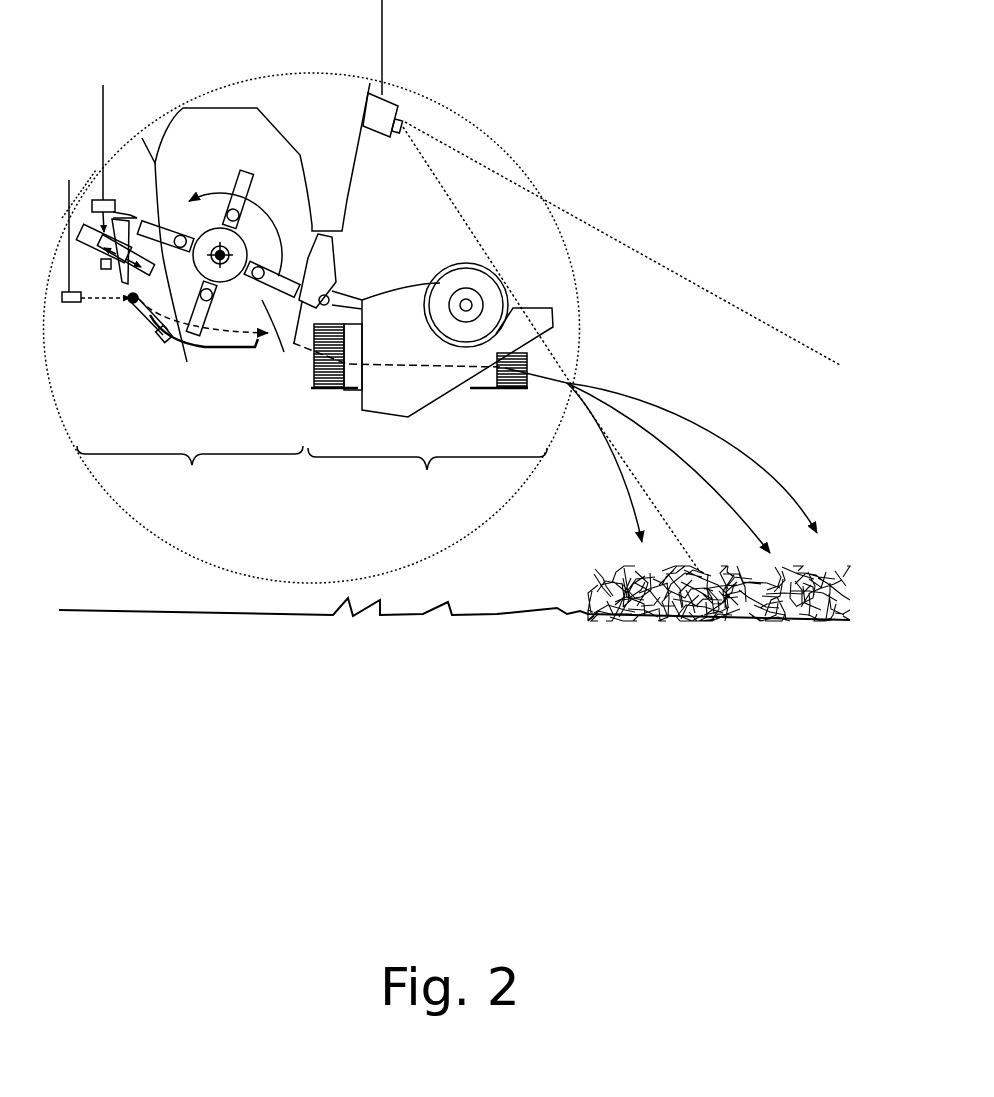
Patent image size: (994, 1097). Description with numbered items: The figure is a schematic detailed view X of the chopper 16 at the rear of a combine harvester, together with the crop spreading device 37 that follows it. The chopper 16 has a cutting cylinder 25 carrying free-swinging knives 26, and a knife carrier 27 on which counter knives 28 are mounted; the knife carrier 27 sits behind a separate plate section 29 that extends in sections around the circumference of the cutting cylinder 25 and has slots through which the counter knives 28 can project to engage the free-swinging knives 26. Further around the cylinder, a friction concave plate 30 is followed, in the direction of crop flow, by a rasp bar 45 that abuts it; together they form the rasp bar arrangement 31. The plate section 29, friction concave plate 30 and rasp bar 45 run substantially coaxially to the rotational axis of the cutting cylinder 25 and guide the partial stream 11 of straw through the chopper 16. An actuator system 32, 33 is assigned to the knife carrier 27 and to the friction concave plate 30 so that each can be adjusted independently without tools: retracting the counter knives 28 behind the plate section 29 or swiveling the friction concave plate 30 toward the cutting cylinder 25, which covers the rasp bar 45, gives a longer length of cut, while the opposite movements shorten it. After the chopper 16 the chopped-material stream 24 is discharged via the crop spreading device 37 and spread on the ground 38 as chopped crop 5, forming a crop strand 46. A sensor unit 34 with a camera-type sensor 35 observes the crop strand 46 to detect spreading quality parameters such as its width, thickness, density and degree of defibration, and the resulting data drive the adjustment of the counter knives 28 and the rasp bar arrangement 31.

The chopped crop or straw 5 is at (662, 578).
The partial stream 11 is at (183, 108).
The chopper 16 is at (190, 477).
The chopped-material stream 24 is at (338, 298).
The cutting cylinder 25 is at (236, 268).
The knives 26 is at (284, 352).
The knife carrier 27 is at (105, 278).
The counter knives 28 is at (158, 277).
The plate section 29 is at (105, 232).
The friction concave plate 30 is at (136, 337).
The rasp bar arrangement 31 is at (148, 352).
The actuator system 32 is at (103, 212).
The actuator system 33 is at (69, 303).
The sensor unit 34 is at (390, 97).
The sensor 35 is at (405, 122).
The crop spreading device 37 is at (427, 416).
The ground 38 is at (497, 614).
The rasp bar 45 is at (153, 332).
The crop strand 46 is at (833, 595).
The detailed view X is at (527, 173).